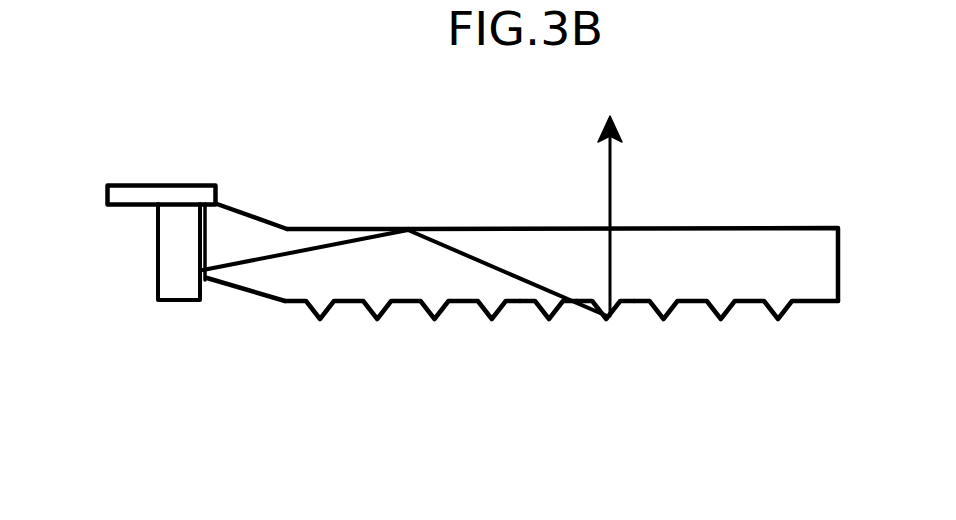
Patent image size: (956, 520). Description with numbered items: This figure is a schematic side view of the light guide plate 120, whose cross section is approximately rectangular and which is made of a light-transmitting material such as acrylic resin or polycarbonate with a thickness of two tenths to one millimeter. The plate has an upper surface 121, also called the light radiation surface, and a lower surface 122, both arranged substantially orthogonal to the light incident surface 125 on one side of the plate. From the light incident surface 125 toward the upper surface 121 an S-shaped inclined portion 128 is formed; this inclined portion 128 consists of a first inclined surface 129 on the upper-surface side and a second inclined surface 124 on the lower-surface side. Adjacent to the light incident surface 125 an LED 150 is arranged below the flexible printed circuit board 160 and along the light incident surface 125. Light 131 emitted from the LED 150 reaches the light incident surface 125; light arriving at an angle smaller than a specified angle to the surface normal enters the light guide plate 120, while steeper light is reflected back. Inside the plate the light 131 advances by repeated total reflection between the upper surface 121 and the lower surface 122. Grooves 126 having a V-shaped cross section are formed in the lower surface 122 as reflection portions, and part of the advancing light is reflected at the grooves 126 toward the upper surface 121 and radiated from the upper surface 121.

The light guide plate 120 is at (457, 280).
The upper surface 121 is at (695, 227).
The lower surface 122 is at (682, 303).
The second inclined surface 124 is at (265, 301).
The light incident surface 125 is at (203, 249).
The grooves 126 is at (548, 320).
The inclined portion 128 is at (255, 242).
The first inclined surface 129 is at (258, 218).
The light 131 is at (352, 243).
The LED 150 is at (175, 300).
The flexible printed circuit board 160 is at (170, 183).